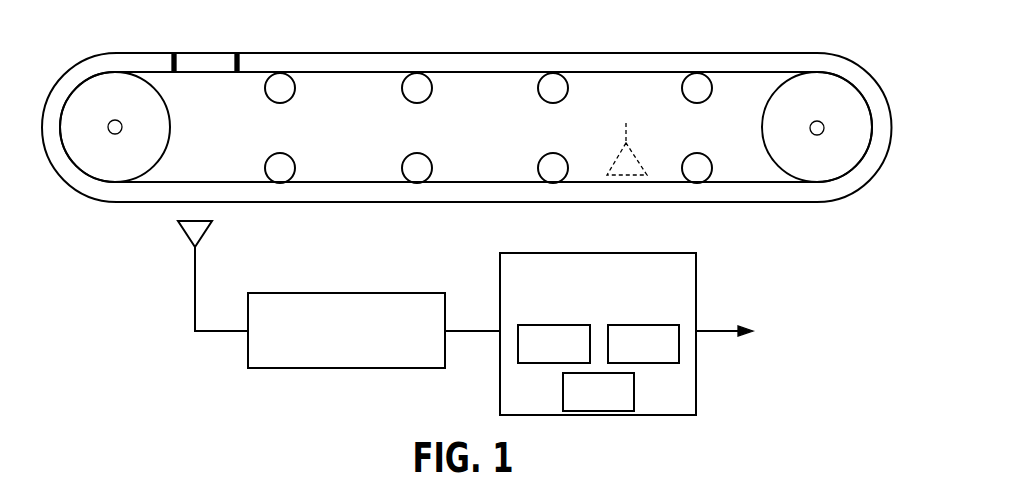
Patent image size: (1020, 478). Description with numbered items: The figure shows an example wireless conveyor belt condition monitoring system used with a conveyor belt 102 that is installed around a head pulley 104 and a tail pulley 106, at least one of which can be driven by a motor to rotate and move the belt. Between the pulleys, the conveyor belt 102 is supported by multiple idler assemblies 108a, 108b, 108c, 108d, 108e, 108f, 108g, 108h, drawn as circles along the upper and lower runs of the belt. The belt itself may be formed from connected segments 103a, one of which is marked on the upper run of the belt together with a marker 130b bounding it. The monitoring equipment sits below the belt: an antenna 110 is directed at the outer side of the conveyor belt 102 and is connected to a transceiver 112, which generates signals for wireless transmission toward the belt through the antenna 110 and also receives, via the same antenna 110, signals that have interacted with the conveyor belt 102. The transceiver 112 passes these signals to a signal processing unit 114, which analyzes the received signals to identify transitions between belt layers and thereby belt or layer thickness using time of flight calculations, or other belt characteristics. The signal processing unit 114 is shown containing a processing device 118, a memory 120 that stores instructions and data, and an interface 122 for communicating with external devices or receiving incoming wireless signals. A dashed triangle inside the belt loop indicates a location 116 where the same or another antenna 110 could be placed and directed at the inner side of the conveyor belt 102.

The conveyor belt 102 is at (467, 53).
The segment 103a is at (203, 60).
The belt segment marker 130b is at (238, 60).
The head pulley 104 is at (98, 166).
The tail pulley 106 is at (799, 168).
The idler assembly 108a is at (277, 102).
The idler assembly 108b is at (277, 154).
The idler assembly 108c is at (414, 102).
The idler assembly 108d is at (414, 154).
The idler assembly 108e is at (550, 102).
The idler assembly 108f is at (550, 154).
The idler assembly 108g is at (712, 88).
The idler assembly 108h is at (712, 170).
The antenna 110 is at (186, 235).
The transceiver 112 is at (385, 293).
The signal processing unit 114 is at (631, 334).
The location 116 is at (638, 158).
The processing device 118 is at (536, 356).
The memory 120 is at (625, 356).
The interface 122 is at (580, 403).